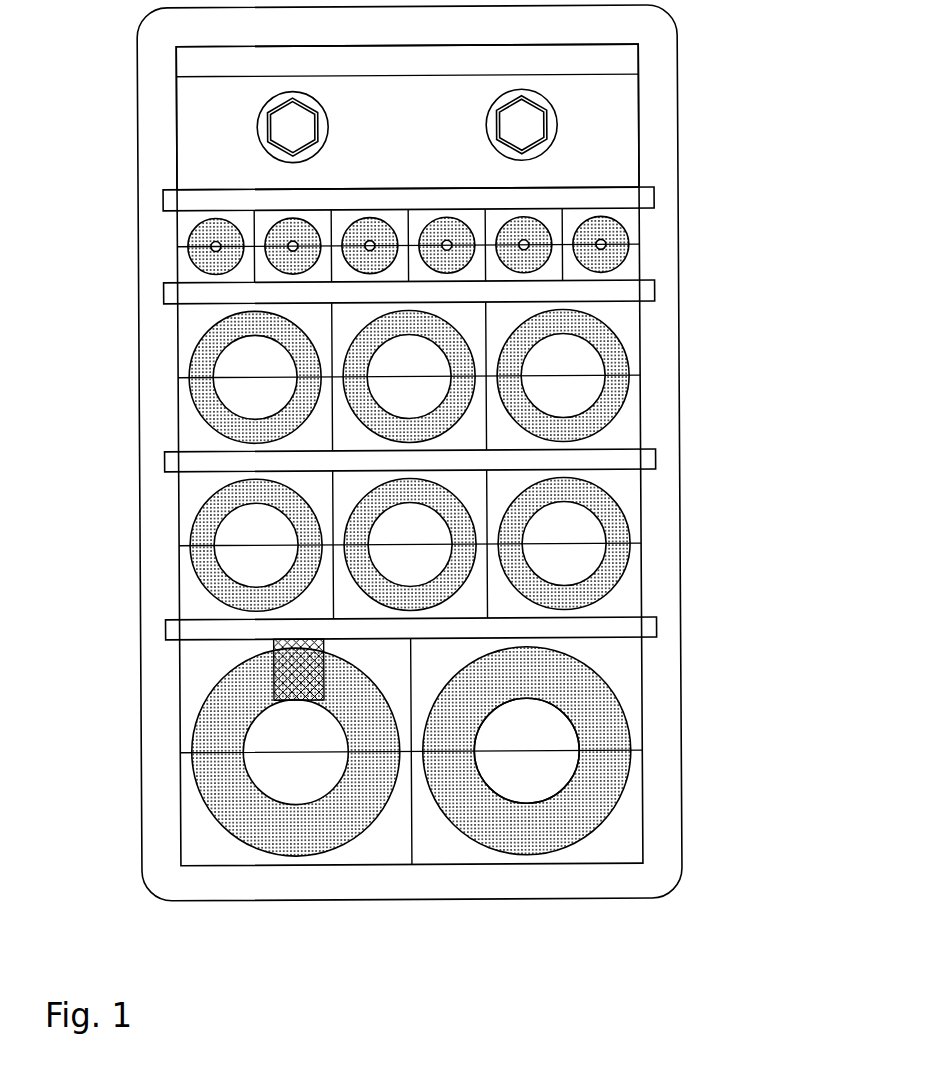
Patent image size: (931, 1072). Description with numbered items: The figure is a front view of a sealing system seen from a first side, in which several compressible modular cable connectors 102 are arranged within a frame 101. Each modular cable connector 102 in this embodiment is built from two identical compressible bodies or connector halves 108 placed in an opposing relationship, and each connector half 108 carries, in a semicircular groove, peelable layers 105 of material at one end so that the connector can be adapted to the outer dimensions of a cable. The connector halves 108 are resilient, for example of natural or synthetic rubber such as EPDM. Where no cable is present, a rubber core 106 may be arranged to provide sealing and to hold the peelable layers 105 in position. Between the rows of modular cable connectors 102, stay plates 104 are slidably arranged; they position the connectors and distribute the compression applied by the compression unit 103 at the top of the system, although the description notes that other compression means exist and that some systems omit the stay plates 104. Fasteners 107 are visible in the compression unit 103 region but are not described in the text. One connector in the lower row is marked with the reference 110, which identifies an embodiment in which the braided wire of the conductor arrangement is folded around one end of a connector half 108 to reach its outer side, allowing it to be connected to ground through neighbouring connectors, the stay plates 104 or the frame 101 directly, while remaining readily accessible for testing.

The frame 101 is at (660, 42).
The modular cable connector 102 is at (622, 645).
The compression unit 103 is at (610, 150).
The stay plate 104 is at (640, 288).
The peelable layers 105 is at (557, 818).
The rubber core 106 is at (552, 738).
The hex bolt 107 is at (515, 123).
The connector half 108 is at (622, 496).
The modular connector with folded conductor arrangement 110 is at (270, 648).